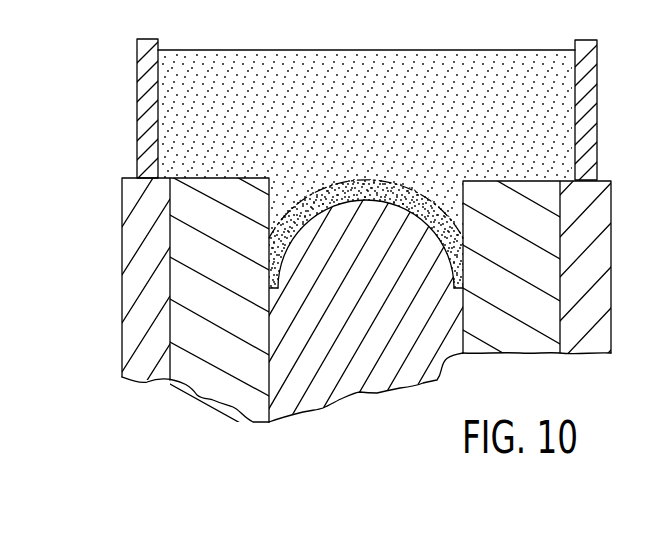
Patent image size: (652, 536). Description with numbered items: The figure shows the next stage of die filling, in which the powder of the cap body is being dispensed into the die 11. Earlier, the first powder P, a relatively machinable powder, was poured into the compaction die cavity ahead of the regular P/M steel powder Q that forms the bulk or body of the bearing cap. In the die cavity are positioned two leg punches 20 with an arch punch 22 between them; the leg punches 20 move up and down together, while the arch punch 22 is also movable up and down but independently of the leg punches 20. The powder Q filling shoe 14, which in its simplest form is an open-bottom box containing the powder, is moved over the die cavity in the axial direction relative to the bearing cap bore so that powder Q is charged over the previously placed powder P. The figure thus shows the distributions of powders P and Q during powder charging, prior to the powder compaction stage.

The die 11 is at (122, 277).
The powder Q filling shoe 14 is at (137, 108).
The leg punches 20 is at (205, 395).
The arch punch 22 is at (405, 378).
The powder Q is at (367, 50).
The powder P is at (372, 198).